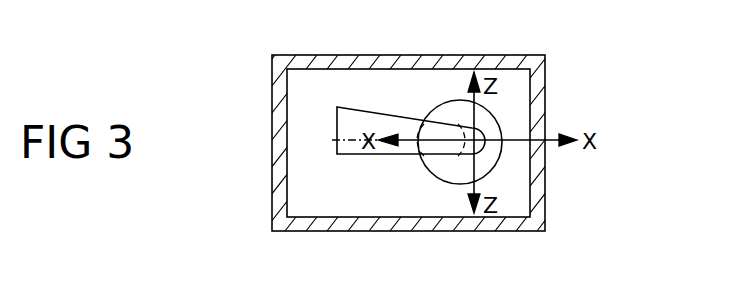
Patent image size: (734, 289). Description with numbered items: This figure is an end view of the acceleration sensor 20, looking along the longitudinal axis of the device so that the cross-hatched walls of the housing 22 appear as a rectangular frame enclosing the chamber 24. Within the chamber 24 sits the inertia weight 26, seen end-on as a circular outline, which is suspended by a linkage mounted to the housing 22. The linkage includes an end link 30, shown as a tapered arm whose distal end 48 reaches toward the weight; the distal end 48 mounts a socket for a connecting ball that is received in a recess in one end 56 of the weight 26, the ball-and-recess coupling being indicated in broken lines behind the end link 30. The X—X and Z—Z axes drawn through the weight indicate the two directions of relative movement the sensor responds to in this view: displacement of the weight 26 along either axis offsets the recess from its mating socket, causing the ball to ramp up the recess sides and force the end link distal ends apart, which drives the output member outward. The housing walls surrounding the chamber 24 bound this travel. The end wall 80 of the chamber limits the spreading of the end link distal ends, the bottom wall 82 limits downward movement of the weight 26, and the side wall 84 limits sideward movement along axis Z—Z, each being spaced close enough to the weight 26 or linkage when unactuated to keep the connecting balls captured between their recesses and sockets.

The acceleration sensor 20 is at (560, 112).
The housing 22 is at (543, 57).
The chamber 24 is at (318, 108).
The inertia weight 26 is at (450, 108).
The end link 30 is at (337, 150).
The distal end of end link 48 is at (455, 150).
The end of weight 56 is at (487, 166).
The end wall 80 is at (342, 200).
The bottom wall 82 is at (383, 217).
The side wall 84 is at (376, 70).